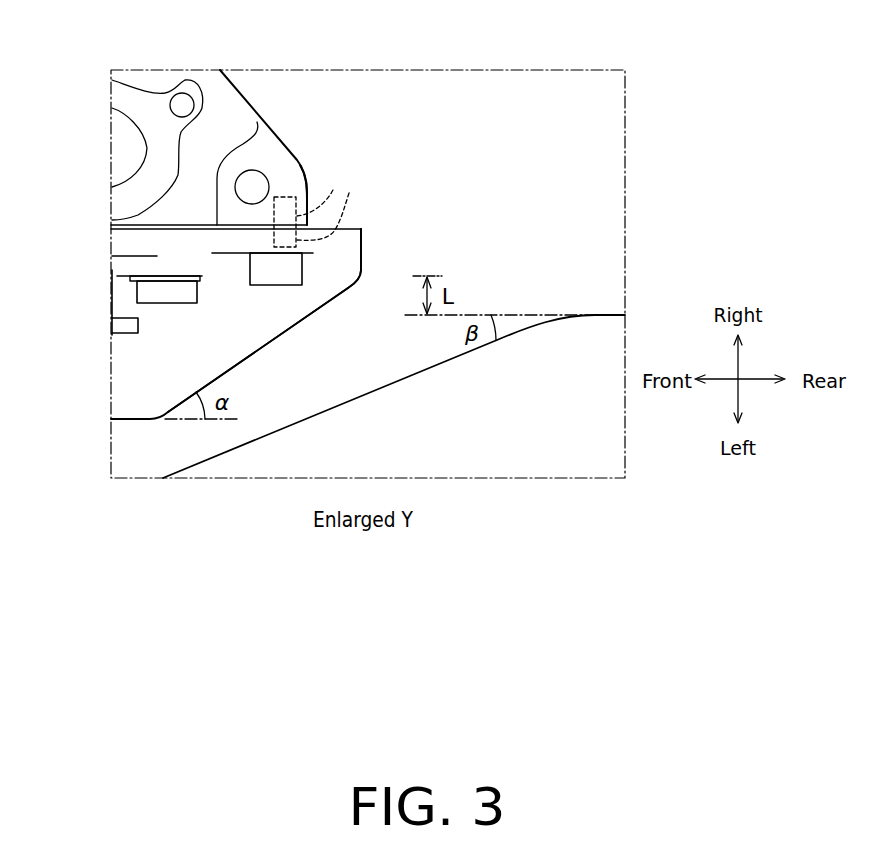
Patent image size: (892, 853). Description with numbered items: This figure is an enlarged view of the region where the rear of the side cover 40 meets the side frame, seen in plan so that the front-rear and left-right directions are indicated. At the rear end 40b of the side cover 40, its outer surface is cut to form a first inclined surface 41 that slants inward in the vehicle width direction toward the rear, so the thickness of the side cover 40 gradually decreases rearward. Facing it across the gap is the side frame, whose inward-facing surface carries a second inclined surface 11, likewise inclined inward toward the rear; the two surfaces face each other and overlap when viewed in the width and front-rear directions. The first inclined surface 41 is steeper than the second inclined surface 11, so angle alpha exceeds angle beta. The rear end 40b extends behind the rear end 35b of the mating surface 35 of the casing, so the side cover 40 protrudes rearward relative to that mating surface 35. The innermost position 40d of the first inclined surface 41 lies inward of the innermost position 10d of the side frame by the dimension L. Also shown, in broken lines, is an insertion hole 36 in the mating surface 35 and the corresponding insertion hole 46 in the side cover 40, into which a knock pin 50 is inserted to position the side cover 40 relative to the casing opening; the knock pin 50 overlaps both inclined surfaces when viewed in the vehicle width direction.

The inner surface / innermost position of side frame 10d is at (595, 315).
The second inclined surface 11 is at (393, 383).
The mating surface 35 is at (177, 228).
The rear end of mating surface 35b is at (307, 225).
The insertion hole 36 is at (292, 213).
The side cover 40 is at (134, 368).
The rear end of side cover 40b is at (362, 247).
The innermost position of first inclined surface 40d is at (355, 287).
The first inclined surface 41 is at (280, 337).
The insertion hole 46 is at (350, 190).
The knock pin 50 is at (333, 190).